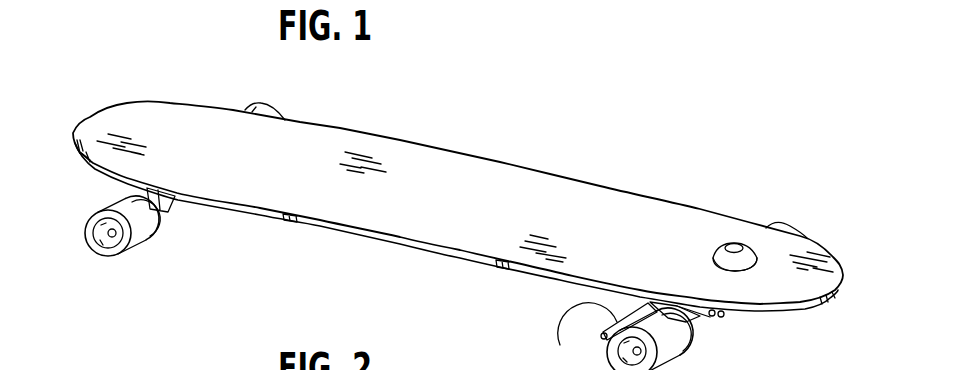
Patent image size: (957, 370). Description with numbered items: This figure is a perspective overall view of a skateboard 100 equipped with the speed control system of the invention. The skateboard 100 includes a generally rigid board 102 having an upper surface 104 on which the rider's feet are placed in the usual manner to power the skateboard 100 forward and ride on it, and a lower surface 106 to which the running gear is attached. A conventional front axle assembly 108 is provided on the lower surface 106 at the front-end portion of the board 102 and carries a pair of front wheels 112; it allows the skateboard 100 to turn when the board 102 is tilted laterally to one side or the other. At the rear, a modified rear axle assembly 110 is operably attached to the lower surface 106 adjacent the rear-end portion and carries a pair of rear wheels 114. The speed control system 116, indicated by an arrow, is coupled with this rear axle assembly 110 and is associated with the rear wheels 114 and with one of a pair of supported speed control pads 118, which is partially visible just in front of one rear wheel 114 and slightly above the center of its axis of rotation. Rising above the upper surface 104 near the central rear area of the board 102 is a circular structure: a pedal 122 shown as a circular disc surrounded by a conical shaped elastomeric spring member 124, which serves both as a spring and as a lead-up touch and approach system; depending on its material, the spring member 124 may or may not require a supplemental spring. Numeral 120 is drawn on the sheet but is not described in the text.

The skateboard 100 is at (488, 120).
The board 102 is at (648, 198).
The upper surface 104 is at (533, 186).
The lower surface 106 is at (494, 275).
The front axle assembly 108 is at (172, 207).
The modified rear axle assembly 110 is at (699, 328).
The front wheels 112 is at (267, 106).
The rear wheels 114 is at (782, 222).
The speed control system 116 is at (609, 307).
The speed control pads 118 is at (600, 320).
The rear wheel 120 is at (650, 339).
The pedal 122 is at (733, 247).
The conical shaped elastomeric spring member 124 is at (738, 264).